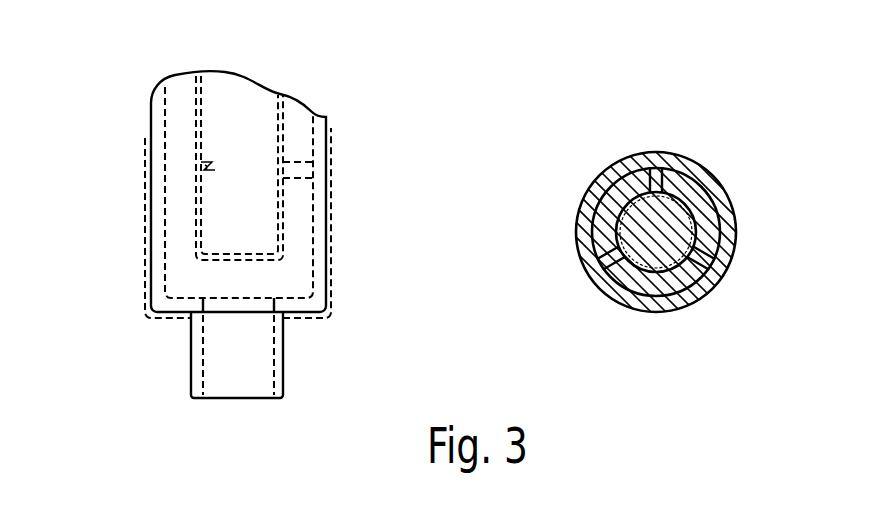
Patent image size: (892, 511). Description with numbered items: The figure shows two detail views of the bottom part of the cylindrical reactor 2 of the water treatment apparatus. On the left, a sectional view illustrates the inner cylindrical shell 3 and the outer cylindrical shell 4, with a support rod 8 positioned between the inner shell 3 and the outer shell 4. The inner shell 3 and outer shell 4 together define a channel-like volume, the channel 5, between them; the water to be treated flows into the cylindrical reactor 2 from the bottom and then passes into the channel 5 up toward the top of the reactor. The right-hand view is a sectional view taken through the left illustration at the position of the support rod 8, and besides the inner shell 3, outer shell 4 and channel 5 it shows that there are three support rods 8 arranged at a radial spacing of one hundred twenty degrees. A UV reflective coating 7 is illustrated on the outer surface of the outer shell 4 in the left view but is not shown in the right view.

The cylindrical reactor 2 is at (122, 80).
The inner cylindrical shell 3 is at (197, 95).
The outer cylindrical shell 4 is at (158, 258).
The channel 5 is at (178, 183).
The UV reflective coating 7 is at (143, 225).
The support rod 8 is at (298, 162).